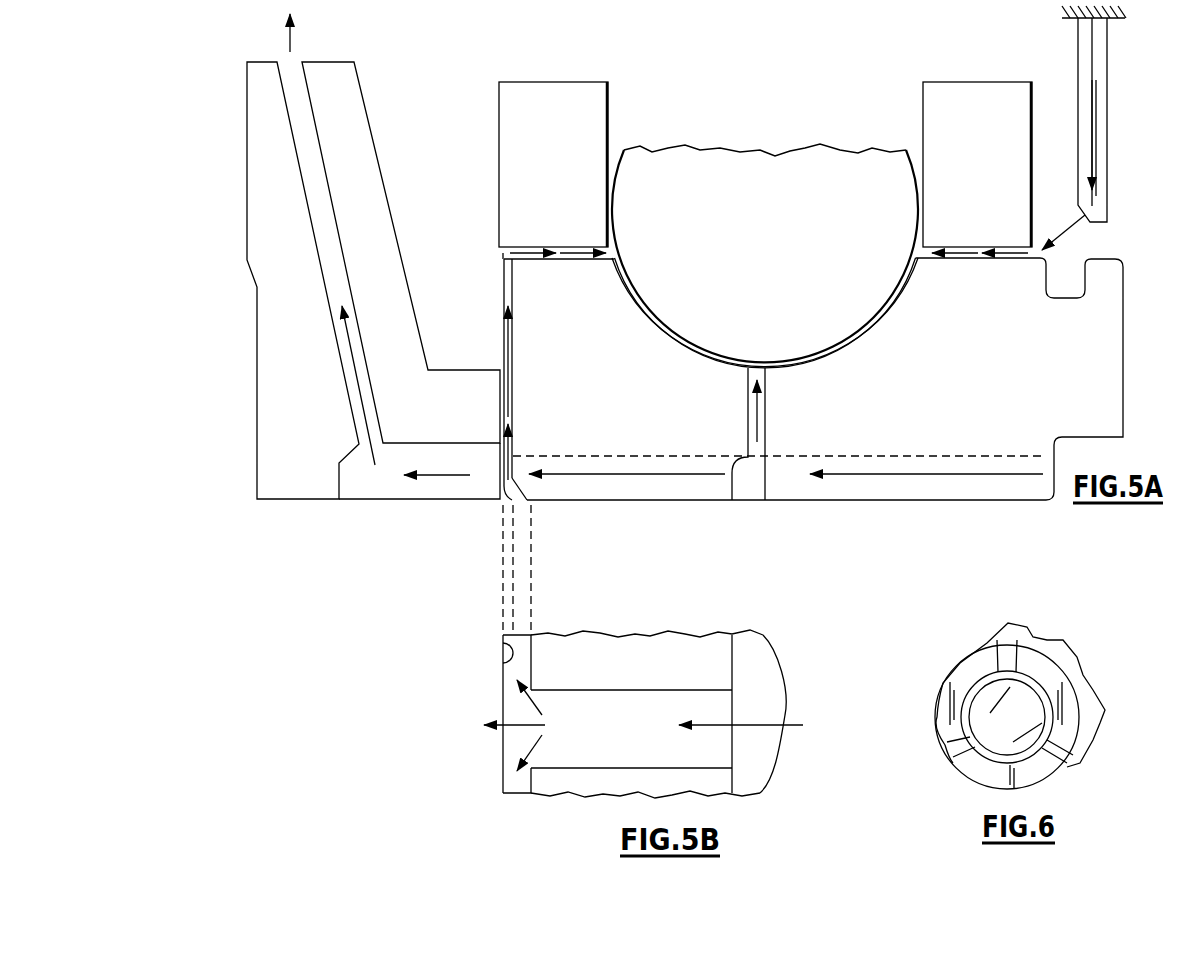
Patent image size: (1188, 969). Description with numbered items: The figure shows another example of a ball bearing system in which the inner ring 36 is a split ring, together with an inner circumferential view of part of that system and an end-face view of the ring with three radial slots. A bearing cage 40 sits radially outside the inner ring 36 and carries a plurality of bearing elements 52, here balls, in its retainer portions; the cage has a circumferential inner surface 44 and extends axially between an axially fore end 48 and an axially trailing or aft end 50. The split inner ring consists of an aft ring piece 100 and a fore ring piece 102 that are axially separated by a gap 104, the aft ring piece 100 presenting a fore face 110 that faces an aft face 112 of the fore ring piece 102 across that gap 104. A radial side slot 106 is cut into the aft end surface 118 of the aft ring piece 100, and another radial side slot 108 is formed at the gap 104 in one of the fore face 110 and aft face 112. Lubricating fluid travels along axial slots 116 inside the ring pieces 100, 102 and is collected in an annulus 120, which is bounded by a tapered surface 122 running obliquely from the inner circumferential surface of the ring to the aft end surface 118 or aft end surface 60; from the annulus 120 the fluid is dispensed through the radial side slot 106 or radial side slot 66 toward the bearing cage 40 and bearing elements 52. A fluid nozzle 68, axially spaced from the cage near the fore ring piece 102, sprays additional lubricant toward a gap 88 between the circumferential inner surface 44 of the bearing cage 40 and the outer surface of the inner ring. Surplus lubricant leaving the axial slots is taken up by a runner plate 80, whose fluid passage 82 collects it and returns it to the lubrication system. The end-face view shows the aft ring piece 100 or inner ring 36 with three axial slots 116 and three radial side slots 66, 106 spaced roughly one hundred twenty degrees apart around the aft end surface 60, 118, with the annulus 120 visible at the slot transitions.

In FIG. 6, the inner ring 36 is at (1038, 664).
In FIG. 5A, the bearing cage 40 is at (499, 148).
In FIG. 5A, the circumferential inner surface 44 is at (503, 252).
In FIG. 5A, the axially fore end 48 is at (1035, 113).
In FIG. 5A, the axially trailing or aft end 50 is at (499, 187).
In FIG. 5A, the bearing elements 52 is at (776, 178).
In FIG. 6, the aft end surface 60 is at (977, 767).
In FIG. 6, the radial side slot 66 is at (1008, 655).
In FIG. 5A, the fluid nozzle 68 is at (1110, 168).
In FIG. 5A, the runner plate 80 is at (273, 329).
In FIG. 5A, the fluid passage 82 is at (333, 230).
In FIG. 5A, the gap 88 is at (1052, 262).
In FIG. 5A, the aft ring piece 100 is at (627, 377).
In FIG. 6, the aft ring piece 100 is at (1031, 698).
In FIG. 5A, the fore ring piece 102 is at (997, 348).
In FIG. 5A, the gap 104 is at (770, 396).
In FIG. 5A, the radial side slot 106 is at (503, 288).
In FIG. 5B, the radial side slot 106 is at (503, 656).
In FIG. 6, the radial side slot 106 is at (1083, 790).
In FIG. 5A, the radial side slot 108 is at (766, 449).
In FIG. 5A, the fore face 110 is at (748, 418).
In FIG. 5A, the aft face 112 is at (766, 422).
In FIG. 5A, the axial slots 116 is at (697, 501).
In FIG. 5B, the axial slots 116 is at (718, 752).
In FIG. 5A, the aft end surface 118 is at (513, 281).
In FIG. 5B, the aft end surface 118 is at (531, 793).
In FIG. 6, the aft end surface 118 is at (984, 745).
In FIG. 5A, the annulus 120 is at (510, 497).
In FIG. 5B, the annulus 120 is at (506, 687).
In FIG. 6, the annulus 120 is at (1060, 702).
In FIG. 5A, the tapered surface 122 is at (522, 498).
In FIG. 5B, the tapered surface 122 is at (531, 672).